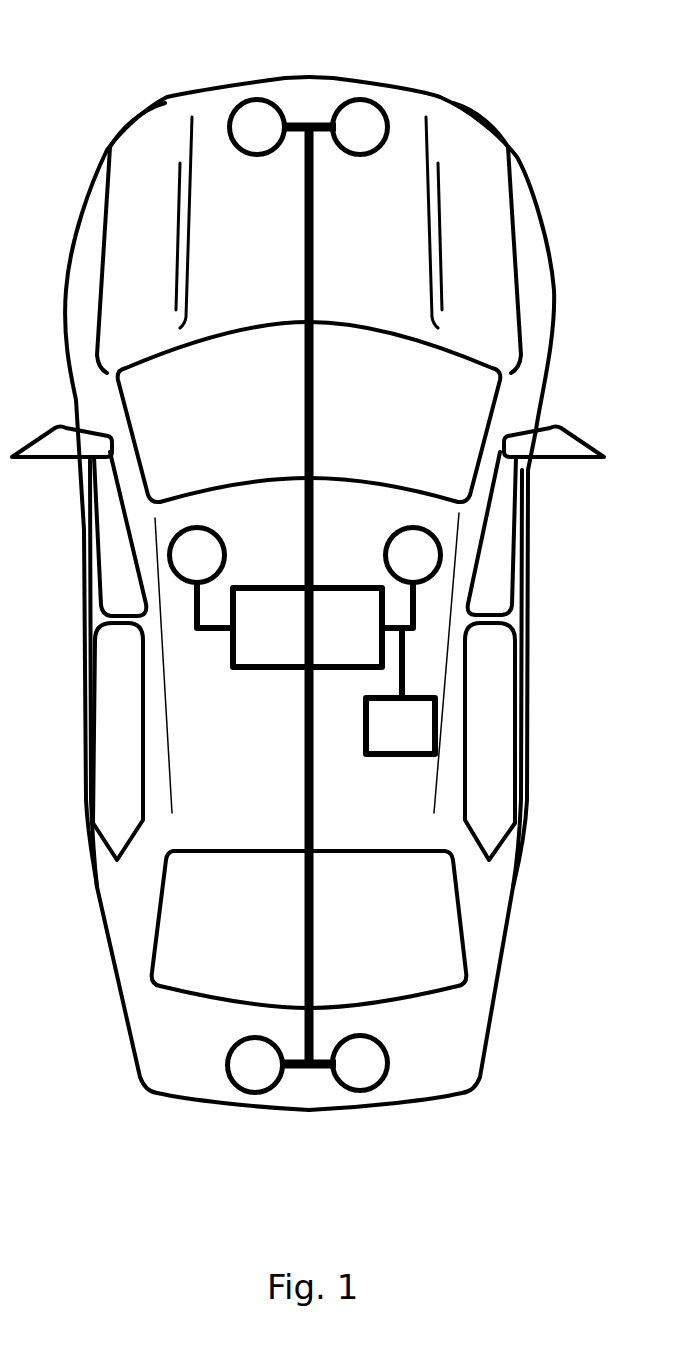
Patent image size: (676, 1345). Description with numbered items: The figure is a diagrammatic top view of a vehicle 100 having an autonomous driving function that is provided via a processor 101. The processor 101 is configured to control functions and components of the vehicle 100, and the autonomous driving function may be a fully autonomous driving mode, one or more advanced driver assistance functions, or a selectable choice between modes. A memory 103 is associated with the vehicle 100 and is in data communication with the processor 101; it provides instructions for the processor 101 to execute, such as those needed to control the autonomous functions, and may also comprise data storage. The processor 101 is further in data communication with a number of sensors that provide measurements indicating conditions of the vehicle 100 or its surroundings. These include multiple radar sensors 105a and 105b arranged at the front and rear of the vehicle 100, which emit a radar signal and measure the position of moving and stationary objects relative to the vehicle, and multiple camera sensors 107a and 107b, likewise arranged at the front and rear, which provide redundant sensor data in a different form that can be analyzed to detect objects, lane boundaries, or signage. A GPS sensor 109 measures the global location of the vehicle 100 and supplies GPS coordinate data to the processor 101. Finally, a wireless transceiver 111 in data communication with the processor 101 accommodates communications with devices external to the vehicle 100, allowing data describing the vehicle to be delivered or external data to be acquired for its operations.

The vehicle 100 is at (110, 91).
The processor 101 is at (326, 641).
The memory 103 is at (421, 741).
The radar sensor 105a is at (257, 118).
The radar sensor 105b is at (253, 1066).
The camera sensor 107a is at (372, 117).
The camera sensor 107b is at (368, 1067).
The GPS sensor 109 is at (198, 545).
The wireless transceiver 111 is at (417, 545).